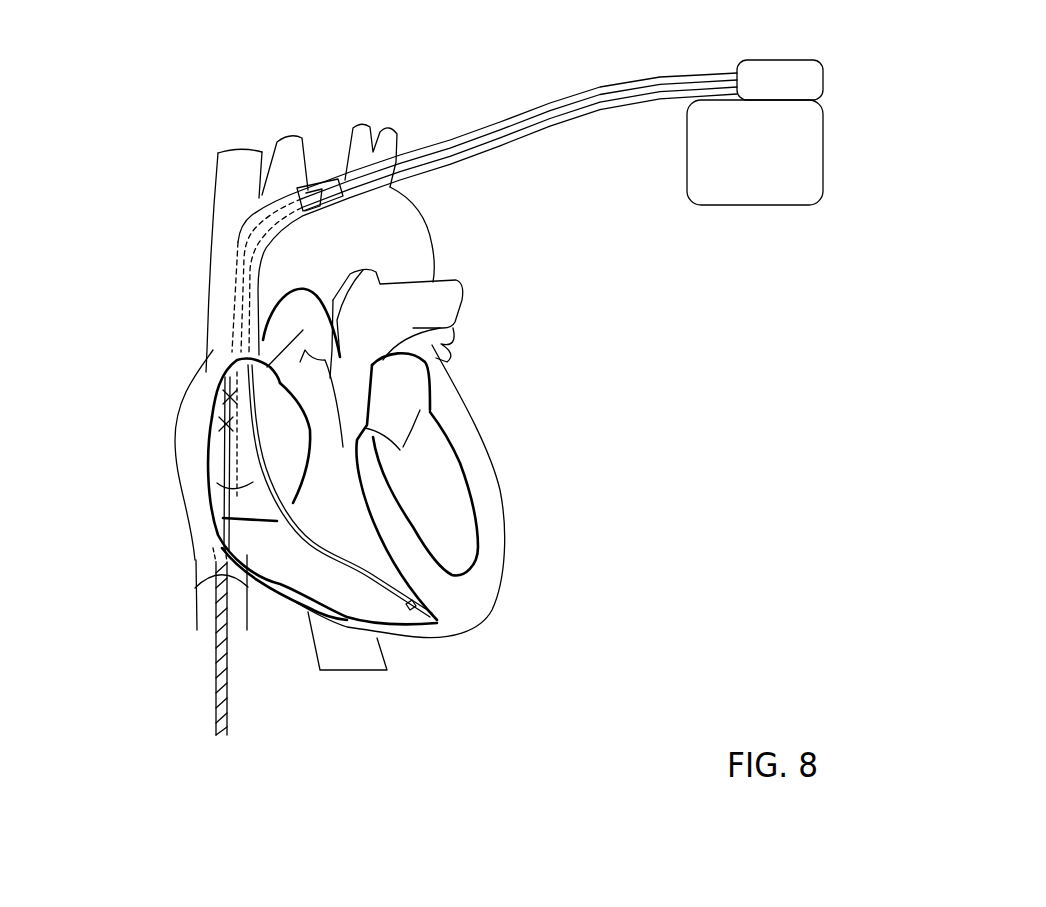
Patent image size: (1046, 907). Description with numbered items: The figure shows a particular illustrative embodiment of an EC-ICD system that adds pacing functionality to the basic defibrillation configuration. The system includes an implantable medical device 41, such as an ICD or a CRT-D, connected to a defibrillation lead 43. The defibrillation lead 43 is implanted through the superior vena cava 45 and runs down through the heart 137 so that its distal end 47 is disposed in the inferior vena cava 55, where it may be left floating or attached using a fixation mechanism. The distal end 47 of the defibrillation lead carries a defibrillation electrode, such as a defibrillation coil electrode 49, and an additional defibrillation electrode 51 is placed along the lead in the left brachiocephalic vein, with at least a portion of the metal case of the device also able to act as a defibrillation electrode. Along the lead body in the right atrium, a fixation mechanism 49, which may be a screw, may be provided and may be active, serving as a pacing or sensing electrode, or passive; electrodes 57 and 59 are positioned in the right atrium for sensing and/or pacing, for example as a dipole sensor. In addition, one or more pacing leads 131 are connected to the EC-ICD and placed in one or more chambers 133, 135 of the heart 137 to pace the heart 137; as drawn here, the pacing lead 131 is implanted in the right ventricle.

The implantable medical device 41 is at (773, 246).
The defibrillation lead 43 is at (673, 74).
The superior vena cava 45 is at (210, 232).
The distal end 47 is at (213, 733).
The defibrillation coil electrode 49 is at (215, 402).
The additional defibrillation electrode 51 is at (292, 188).
The inferior vena cava 55 is at (197, 593).
The electrode 57 is at (213, 383).
The electrode 59 is at (215, 412).
The pacing lead 131 is at (387, 593).
The chamber 133 is at (212, 493).
The chamber 135 is at (350, 617).
The heart 137 is at (570, 563).